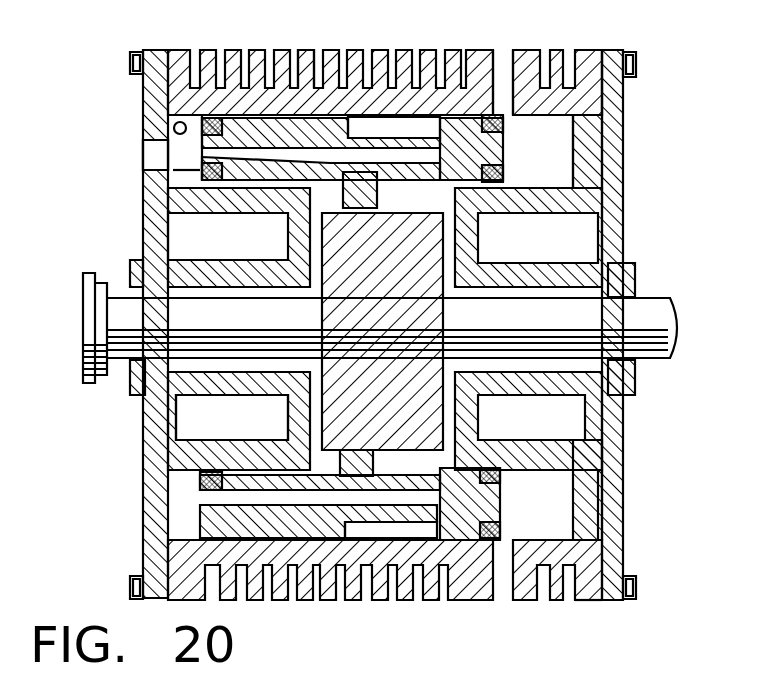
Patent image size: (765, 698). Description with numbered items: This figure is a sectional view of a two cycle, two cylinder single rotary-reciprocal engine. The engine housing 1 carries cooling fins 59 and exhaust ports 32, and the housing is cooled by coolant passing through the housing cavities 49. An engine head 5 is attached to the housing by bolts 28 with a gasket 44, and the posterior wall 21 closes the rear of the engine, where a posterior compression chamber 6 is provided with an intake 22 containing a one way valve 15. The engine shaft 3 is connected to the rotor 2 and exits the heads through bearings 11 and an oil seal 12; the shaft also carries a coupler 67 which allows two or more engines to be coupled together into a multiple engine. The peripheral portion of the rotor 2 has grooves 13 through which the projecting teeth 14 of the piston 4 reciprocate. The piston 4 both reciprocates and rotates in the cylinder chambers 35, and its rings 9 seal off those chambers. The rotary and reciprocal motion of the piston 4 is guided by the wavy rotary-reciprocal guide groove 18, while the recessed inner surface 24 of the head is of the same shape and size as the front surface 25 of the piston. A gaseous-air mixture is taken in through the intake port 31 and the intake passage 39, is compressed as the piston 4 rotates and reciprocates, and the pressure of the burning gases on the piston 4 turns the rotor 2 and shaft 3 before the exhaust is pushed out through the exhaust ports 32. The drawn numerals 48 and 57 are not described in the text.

The engine housing 1 is at (185, 52).
The rotor 2 is at (205, 170).
The engine shaft 3 is at (632, 318).
The piston 4 is at (503, 157).
The engine head 5 is at (610, 100).
The posterior compression chamber 6 is at (163, 170).
The rings 9 is at (219, 118).
The bearings 11 is at (632, 395).
The oil seal 12 is at (636, 368).
The groove 13 is at (330, 205).
The projection 14 is at (350, 465).
The one way valve 15 is at (172, 130).
The rotary-reciprocal guide groove 18 is at (402, 130).
The posterior wall 21 is at (150, 85).
The intake 22 is at (155, 157).
The recessed inner surface 24 is at (587, 160).
The front surface 25 is at (585, 598).
The bolts 28 is at (637, 55).
The intake port 31 is at (555, 200).
The exhaust port 32 is at (505, 97).
The cylinder chambers 35 is at (563, 132).
The intake passage 39 is at (345, 120).
The gasket 44 is at (160, 52).
The stator core 48 is at (563, 457).
The housing cavities 49 is at (215, 422).
The cooling fins 57 is at (425, 585).
The cooling fins 59 is at (280, 55).
The coupler 67 is at (82, 385).